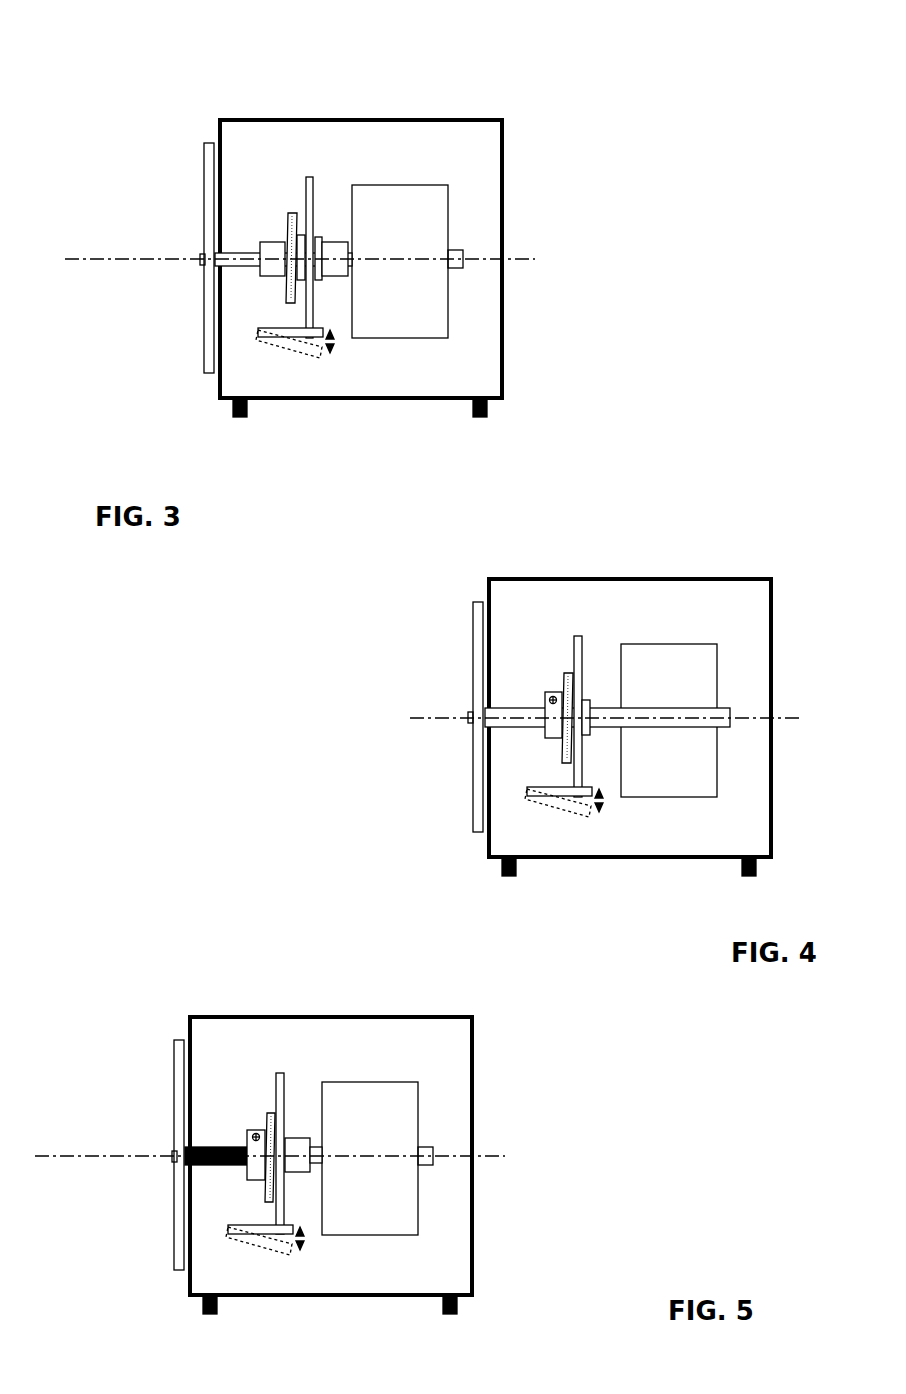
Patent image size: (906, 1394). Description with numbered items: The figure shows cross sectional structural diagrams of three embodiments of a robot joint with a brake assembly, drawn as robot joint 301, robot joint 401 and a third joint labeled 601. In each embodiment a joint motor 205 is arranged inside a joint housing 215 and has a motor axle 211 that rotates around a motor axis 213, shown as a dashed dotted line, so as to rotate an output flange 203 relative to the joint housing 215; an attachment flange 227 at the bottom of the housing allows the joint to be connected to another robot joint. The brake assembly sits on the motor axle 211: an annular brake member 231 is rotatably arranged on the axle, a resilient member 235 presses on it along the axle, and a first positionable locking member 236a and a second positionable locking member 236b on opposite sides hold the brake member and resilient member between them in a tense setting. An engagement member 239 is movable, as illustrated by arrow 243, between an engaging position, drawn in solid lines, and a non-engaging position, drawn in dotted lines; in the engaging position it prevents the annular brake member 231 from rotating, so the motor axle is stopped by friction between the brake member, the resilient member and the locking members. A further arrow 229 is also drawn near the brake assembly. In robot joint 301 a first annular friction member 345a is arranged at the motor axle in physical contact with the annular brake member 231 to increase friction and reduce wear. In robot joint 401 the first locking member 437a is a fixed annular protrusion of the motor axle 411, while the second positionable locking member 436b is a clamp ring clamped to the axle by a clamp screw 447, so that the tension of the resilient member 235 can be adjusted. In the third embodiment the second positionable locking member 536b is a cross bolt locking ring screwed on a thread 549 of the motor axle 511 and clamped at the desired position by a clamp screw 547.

In FIG. 3, the output flange 203 is at (205, 160).
In FIG. 4, the output flange 203 is at (432, 707).
In FIG. 5, the output flange 203 is at (133, 1144).
In FIG. 3, the joint motor 205 is at (435, 233).
In FIG. 4, the joint motor 205 is at (748, 717).
In FIG. 5, the joint motor 205 is at (449, 1155).
In FIG. 3, the motor axle 211 is at (237, 253).
In FIG. 3, the motor axis 213 is at (535, 259).
In FIG. 4, the motor axis 213 is at (640, 702).
In FIG. 5, the motor axis 213 is at (340, 1137).
In FIG. 3, the joint housing 215 is at (503, 167).
In FIG. 4, the joint housing 215 is at (691, 707).
In FIG. 5, the joint housing 215 is at (405, 1144).
In FIG. 3, the attachment flange 227 is at (487, 412).
In FIG. 4, the attachment flange 227 is at (676, 878).
In FIG. 5, the attachment flange 227 is at (378, 1317).
In FIG. 3, the direction arrow 229 is at (265, 296).
In FIG. 4, the direction arrow 229 is at (454, 781).
In FIG. 5, the direction arrow 229 is at (158, 1219).
In FIG. 3, the annular brake member 231 is at (311, 177).
In FIG. 4, the annular brake member 231 is at (633, 635).
In FIG. 5, the annular brake member 231 is at (334, 1072).
In FIG. 3, the resilient member 235 is at (287, 216).
In FIG. 4, the resilient member 235 is at (535, 610).
In FIG. 5, the resilient member 235 is at (234, 1035).
In FIG. 3, the first positionable locking member 236a is at (340, 247).
In FIG. 5, the first positionable locking member 236a is at (372, 1072).
In FIG. 3, the second positionable locking member 236b is at (277, 265).
In FIG. 3, the engagement member 239 is at (270, 343).
In FIG. 4, the engagement member 239 is at (527, 849).
In FIG. 5, the engagement member 239 is at (224, 1295).
In FIG. 3, the arrow 243 is at (332, 342).
In FIG. 4, the arrow 243 is at (606, 816).
In FIG. 5, the arrow 243 is at (307, 1255).
In FIG. 3, the robot joint 301 is at (510, 96).
In FIG. 3, the first annular friction member 345a is at (300, 245).
In FIG. 5, the first annular friction member 345a is at (352, 1060).
In FIG. 4, the robot joint 401 is at (629, 683).
In FIG. 4, the motor axle 411 is at (570, 639).
In FIG. 4, the second positionable locking member 436b is at (492, 629).
In FIG. 4, the first locking member 437a is at (646, 637).
In FIG. 4, the clamp screw 447 is at (502, 596).
In FIG. 5, the motor axle 511 is at (160, 1093).
In FIG. 5, the second positionable locking member 536b is at (195, 1069).
In FIG. 5, the clamp screw 547 is at (203, 1019).
In FIG. 5, the thread 549 is at (160, 1173).
In FIG. 5, the cutting assembly 601 is at (340, 1116).